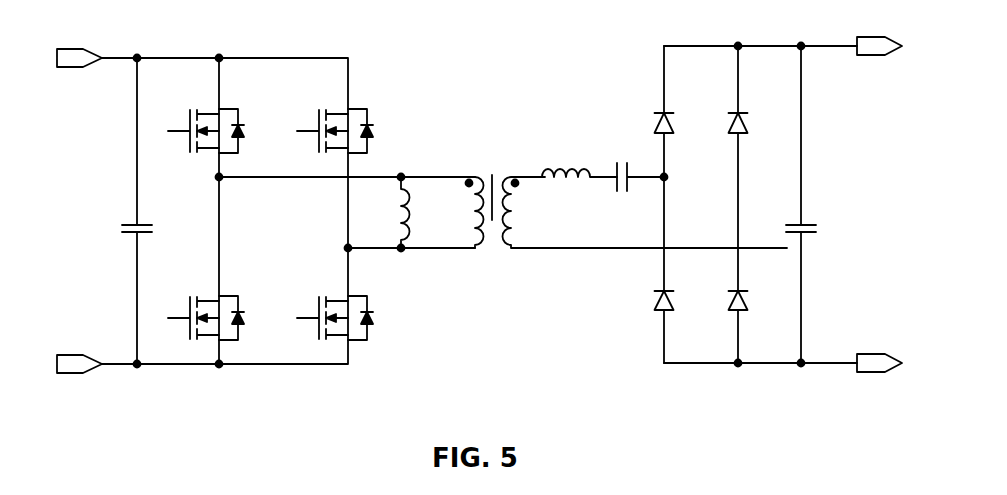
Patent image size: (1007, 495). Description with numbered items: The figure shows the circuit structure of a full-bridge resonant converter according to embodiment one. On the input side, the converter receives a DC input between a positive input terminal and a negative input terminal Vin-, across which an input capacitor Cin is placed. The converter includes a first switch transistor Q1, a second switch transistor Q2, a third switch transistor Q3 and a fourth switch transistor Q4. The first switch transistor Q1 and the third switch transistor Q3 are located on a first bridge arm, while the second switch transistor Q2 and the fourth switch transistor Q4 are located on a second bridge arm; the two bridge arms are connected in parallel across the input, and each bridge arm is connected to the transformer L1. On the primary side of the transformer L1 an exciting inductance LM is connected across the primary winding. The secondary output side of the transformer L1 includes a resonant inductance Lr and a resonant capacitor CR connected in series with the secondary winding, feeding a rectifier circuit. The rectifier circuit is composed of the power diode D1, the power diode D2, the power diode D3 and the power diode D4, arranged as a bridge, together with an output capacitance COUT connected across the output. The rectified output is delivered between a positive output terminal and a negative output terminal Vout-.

The negative input terminal Vin- is at (75, 380).
The input capacitor Cin is at (156, 211).
The first switch transistor Q1 is at (223, 131).
The second switch transistor Q2 is at (223, 318).
The third switch transistor Q3 is at (352, 131).
The fourth switch transistor Q4 is at (352, 318).
The exciting inductance LM is at (420, 213).
The transformer L1 is at (594, 195).
The resonant inductance Lr is at (579, 159).
The resonant capacitor CR is at (636, 161).
The power diode D1 is at (683, 111).
The power diode D2 is at (757, 168).
The power diode D3 is at (682, 270).
The power diode D4 is at (757, 326).
The output capacitance COUT is at (831, 204).
The negative output terminal Vout- is at (871, 380).